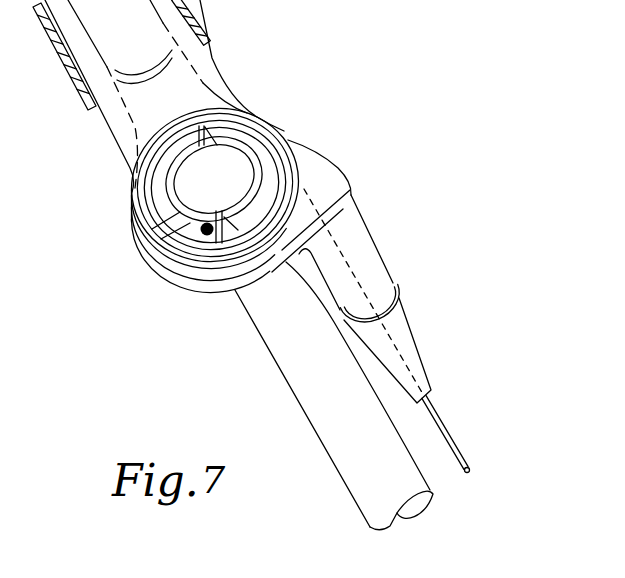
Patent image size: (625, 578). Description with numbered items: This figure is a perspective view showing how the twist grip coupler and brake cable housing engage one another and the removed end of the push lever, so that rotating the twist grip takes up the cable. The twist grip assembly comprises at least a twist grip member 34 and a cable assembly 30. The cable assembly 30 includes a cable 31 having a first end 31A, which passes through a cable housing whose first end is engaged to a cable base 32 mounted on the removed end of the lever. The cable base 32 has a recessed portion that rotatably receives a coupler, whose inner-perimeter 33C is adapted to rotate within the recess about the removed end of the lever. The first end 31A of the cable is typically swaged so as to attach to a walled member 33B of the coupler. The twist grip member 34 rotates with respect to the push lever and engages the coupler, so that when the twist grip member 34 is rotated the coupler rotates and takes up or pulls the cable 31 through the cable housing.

The cable assembly 30 is at (433, 353).
The cable 31 is at (356, 266).
The first end of cable 31A is at (271, 187).
The cable base 32 is at (325, 160).
The walled member 33B is at (208, 236).
The inner-perimeter 33C is at (245, 143).
The twist grip member 34 is at (204, 32).